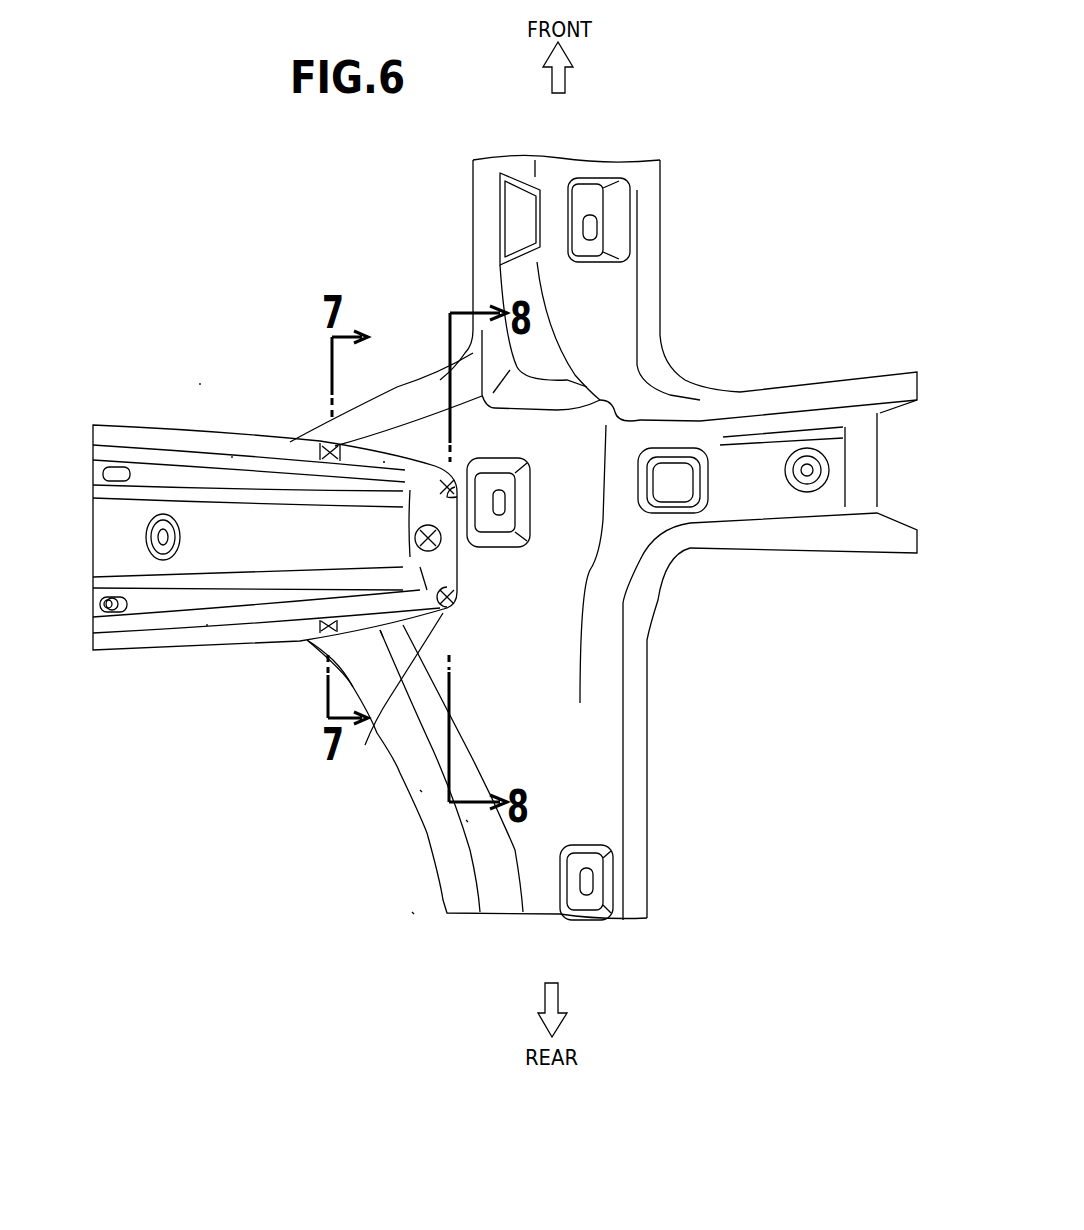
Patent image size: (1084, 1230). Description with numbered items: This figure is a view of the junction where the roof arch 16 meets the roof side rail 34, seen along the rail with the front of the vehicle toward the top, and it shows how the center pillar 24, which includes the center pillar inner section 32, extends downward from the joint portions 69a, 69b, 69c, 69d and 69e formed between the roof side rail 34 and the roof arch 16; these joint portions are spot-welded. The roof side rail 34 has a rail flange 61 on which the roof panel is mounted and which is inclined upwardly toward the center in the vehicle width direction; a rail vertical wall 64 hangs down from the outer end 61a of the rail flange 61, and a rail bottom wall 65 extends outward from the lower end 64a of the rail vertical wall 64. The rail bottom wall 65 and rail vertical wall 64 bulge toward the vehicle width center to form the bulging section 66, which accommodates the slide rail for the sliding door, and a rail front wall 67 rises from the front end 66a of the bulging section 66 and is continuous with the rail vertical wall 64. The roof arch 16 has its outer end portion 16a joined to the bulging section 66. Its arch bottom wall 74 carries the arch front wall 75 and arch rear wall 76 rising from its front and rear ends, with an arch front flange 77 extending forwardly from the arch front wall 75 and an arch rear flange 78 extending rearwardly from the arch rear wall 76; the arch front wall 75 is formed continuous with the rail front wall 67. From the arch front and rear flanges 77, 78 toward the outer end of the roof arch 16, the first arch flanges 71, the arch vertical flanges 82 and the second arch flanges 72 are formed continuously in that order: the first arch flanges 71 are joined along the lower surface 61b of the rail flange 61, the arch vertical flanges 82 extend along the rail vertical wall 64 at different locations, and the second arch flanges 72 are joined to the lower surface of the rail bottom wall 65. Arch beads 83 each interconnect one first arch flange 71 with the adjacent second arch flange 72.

The roof arch 16 is at (114, 666).
The outer end portion 16a is at (395, 553).
The center pillar 24 is at (784, 366).
The center pillar inner section 32 is at (807, 420).
The roof side rail 34 is at (418, 930).
The rail flange 61 is at (413, 796).
The outer end 61a is at (404, 788).
The lower surface 61b is at (420, 790).
The rail vertical wall 64 is at (508, 845).
The lower end 64a is at (456, 827).
The rail bottom wall 65 is at (401, 920).
The bulging section 66 is at (439, 349).
The front end 66a is at (540, 375).
The rail front wall 67 is at (428, 427).
The joint portion 69a is at (318, 449).
The joint portion 69b is at (400, 435).
The joint portion 69c is at (313, 640).
The joint portion 69d is at (443, 740).
The joint portion 69e is at (443, 540).
The first arch flange 71 is at (330, 445).
The second arch flange 72 is at (460, 485).
The arch bottom wall 74 is at (140, 517).
The arch front wall 75 is at (205, 462).
The arch rear wall 76 is at (207, 625).
The arch front flange 77 is at (232, 458).
The arch rear flange 78 is at (233, 636).
The arch vertical flange 82 is at (385, 462).
The arch bead 83 is at (190, 480).